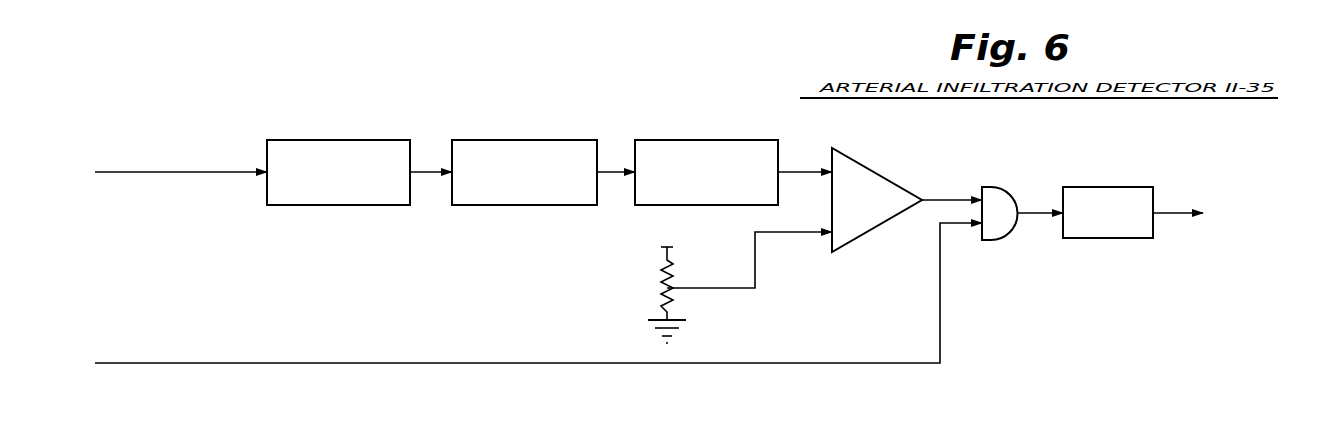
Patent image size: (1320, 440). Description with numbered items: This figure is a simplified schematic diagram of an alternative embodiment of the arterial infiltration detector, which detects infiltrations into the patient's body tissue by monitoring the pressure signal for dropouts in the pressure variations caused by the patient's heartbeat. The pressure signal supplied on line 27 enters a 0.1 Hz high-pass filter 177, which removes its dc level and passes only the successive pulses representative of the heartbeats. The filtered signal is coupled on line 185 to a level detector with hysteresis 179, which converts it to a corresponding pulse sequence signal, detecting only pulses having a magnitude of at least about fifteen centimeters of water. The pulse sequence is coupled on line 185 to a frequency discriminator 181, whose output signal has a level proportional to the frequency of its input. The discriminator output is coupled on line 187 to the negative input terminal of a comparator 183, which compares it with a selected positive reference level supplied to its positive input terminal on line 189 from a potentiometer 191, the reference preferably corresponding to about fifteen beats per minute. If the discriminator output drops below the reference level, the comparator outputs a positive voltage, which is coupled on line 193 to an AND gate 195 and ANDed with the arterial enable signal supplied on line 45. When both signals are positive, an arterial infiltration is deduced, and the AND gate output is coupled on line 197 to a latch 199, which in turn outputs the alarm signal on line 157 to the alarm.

The line 27 is at (213, 175).
The 0.1 Hz high-pass filter 177 is at (334, 140).
The level detector with hysteresis 179 is at (513, 140).
The frequency discriminator 181 is at (708, 140).
The comparator 183 is at (420, 174).
The line 185 is at (605, 174).
The line 187 is at (793, 170).
The line 189 is at (755, 268).
The potentiometer 191 is at (652, 290).
The line 193 is at (930, 200).
The AND gate 195 is at (1000, 241).
The line 45 is at (397, 362).
The line 197 is at (1029, 212).
The latch 199 is at (1118, 238).
The line 157 is at (1168, 212).